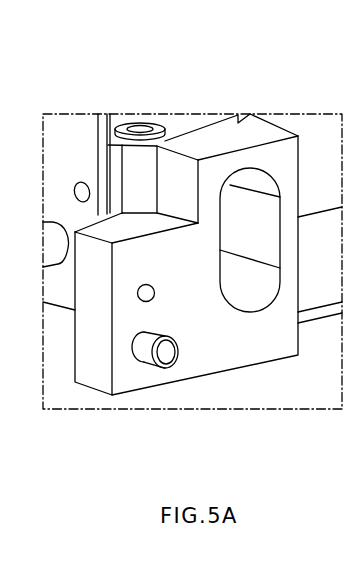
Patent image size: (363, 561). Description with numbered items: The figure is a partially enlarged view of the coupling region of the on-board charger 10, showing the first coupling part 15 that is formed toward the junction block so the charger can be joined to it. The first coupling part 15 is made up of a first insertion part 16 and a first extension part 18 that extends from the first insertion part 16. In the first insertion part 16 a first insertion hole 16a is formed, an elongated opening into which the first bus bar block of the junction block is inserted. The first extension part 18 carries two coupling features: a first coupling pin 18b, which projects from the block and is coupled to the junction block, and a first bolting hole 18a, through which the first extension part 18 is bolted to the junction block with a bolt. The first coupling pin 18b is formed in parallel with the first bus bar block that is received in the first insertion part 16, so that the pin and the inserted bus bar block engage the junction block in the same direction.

The on-board charger 10 is at (339, 62).
The first coupling part 15 is at (115, 187).
The first insertion part 16 is at (198, 145).
The first insertion hole 16a is at (255, 213).
The first extension part 18 is at (168, 258).
The first bolting hole 18a is at (140, 301).
The first coupling pin 18b is at (166, 353).